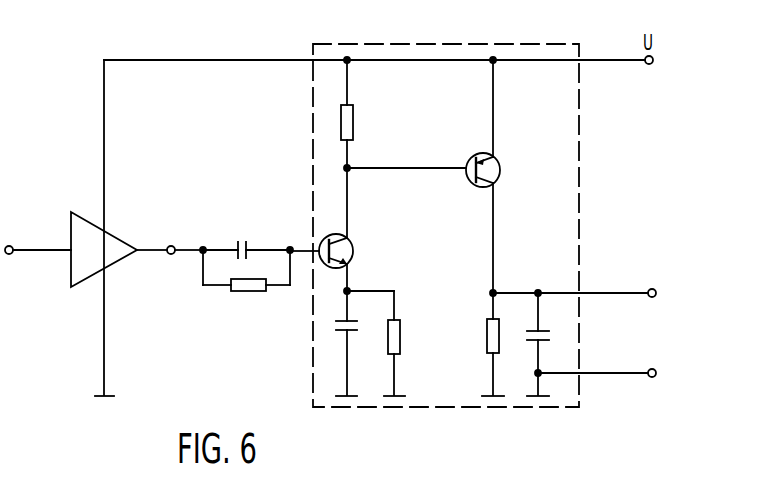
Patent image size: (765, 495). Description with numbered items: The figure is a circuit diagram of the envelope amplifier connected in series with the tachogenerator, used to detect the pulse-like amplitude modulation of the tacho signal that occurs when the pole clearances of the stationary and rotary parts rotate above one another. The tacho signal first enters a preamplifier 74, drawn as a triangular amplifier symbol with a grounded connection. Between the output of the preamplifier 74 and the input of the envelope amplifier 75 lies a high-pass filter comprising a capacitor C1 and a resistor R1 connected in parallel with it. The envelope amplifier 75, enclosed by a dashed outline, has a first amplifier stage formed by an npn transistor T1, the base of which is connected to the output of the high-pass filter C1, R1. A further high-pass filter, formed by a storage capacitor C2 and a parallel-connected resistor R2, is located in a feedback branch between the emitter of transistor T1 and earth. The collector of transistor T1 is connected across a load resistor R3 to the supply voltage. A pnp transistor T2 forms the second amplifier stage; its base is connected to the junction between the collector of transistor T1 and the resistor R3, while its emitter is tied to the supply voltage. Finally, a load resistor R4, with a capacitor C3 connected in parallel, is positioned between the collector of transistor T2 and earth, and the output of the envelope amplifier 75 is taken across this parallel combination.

The preamplifier 74 is at (79, 212).
The envelope amplifier 75 is at (568, 219).
The capacitor C1 is at (246, 236).
The resistor R1 is at (246, 283).
The npn transistor T1 is at (334, 229).
The pnp transistor T2 is at (435, 176).
The load resistor R3 is at (359, 114).
The storage capacitor C2 is at (335, 343).
The resistor R2 is at (376, 343).
The load resistor R4 is at (482, 344).
The capacitor C3 is at (530, 344).